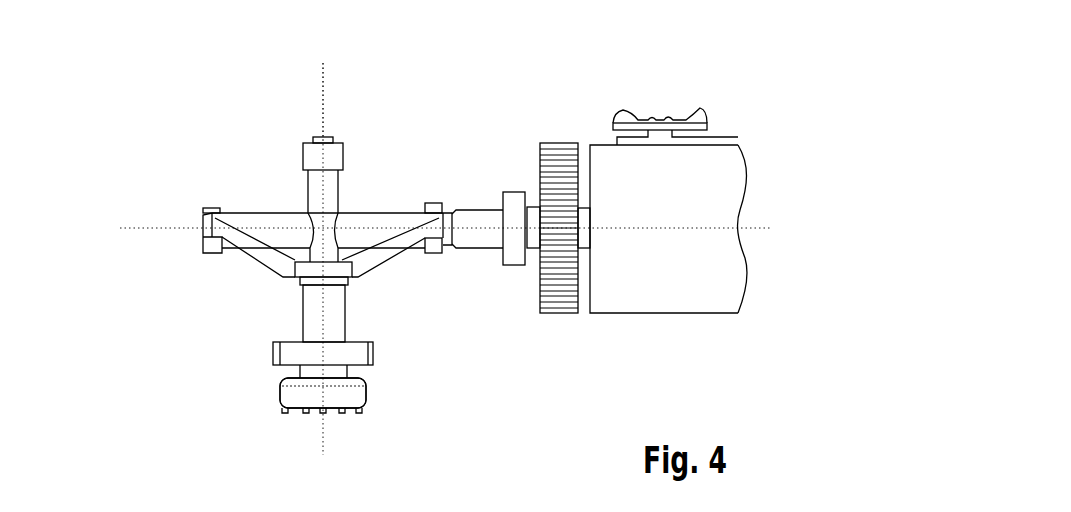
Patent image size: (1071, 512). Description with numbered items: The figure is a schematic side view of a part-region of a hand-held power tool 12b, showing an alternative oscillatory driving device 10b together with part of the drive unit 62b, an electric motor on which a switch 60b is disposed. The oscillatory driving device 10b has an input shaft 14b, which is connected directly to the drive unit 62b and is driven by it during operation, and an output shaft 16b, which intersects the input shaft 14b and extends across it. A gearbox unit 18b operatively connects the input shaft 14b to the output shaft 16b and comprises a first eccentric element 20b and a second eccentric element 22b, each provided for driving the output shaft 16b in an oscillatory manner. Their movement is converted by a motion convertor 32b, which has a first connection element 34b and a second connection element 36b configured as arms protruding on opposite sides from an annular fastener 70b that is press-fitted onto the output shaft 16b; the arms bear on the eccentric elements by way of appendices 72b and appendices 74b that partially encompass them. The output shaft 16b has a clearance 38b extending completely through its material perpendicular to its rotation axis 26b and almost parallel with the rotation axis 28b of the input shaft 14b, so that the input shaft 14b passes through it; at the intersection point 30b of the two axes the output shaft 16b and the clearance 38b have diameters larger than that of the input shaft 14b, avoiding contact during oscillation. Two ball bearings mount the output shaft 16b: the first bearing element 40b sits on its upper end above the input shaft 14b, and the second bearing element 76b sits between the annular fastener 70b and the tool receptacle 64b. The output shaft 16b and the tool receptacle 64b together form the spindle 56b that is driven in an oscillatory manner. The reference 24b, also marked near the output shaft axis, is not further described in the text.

The oscillatory driving device 10b is at (417, 97).
The hand-held power tool 12b is at (497, 80).
The input shaft 14b is at (483, 212).
The output shaft 16b is at (337, 375).
The gearbox unit 18b is at (453, 160).
The first eccentric element 20b is at (432, 204).
The second eccentric element 22b is at (215, 212).
The axis 24b is at (333, 102).
The rotation axis of the output shaft 26b is at (322, 122).
The rotation axis of the input shaft 28b is at (122, 228).
The intersection point 30b is at (322, 215).
The motion convertor 32b is at (225, 290).
The first connection element 34b is at (372, 262).
The second connection element 36b is at (283, 265).
The clearance 38b is at (337, 213).
The first bearing element 40b is at (305, 157).
The spindle 56b is at (250, 395).
The switch 60b is at (696, 118).
The drive unit 62b is at (692, 295).
The tool receptacle 64b is at (298, 395).
The annular fastener 70b is at (298, 282).
The appendices 72b is at (432, 214).
The appendices 74b is at (213, 207).
The second bearing element 76b is at (358, 353).